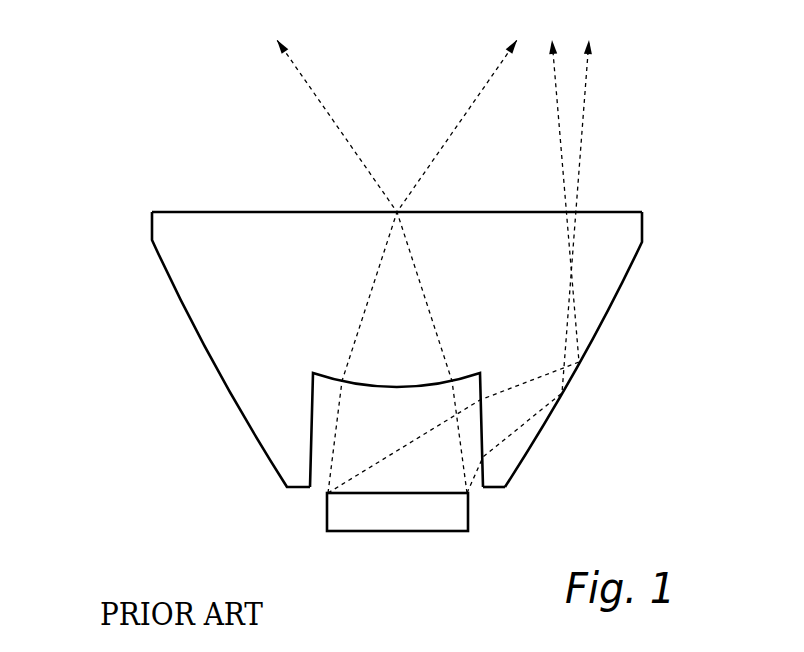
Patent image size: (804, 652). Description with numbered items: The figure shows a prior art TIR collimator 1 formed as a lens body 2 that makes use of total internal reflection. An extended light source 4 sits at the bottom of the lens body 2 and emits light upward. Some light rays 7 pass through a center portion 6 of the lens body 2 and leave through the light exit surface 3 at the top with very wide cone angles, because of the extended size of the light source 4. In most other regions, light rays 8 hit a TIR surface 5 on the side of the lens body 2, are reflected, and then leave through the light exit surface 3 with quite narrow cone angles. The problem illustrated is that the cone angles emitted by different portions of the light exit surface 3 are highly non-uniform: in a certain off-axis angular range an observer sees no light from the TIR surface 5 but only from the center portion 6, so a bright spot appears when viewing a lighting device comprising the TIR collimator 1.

The TIR collimator 1 is at (152, 150).
The lens body 2 is at (193, 275).
The light exit surface 3 is at (268, 212).
The extended light source 4 is at (418, 512).
The TIR surface 5 is at (592, 331).
The center portion 6 is at (372, 342).
The light rays 7 is at (332, 114).
The light rays 8 is at (562, 120).